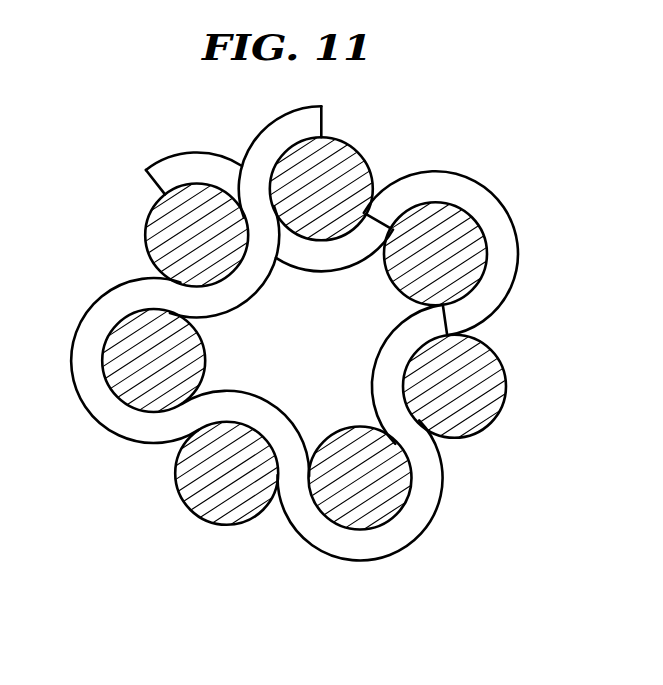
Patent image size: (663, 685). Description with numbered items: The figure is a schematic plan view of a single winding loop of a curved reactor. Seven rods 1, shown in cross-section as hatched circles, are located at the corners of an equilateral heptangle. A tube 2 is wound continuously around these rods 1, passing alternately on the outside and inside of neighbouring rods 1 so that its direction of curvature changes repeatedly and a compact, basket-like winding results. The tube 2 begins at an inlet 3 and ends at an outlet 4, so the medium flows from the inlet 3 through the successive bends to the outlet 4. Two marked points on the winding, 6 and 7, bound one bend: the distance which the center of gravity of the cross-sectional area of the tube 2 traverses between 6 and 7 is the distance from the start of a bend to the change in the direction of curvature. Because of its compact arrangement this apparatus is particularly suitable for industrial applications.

The rod 1 is at (210, 505).
The tube 2 is at (82, 362).
The inlet 3 is at (160, 181).
The outlet 4 is at (313, 127).
The start of a bend 6 is at (406, 178).
The change in direction of curvature 7 is at (448, 333).